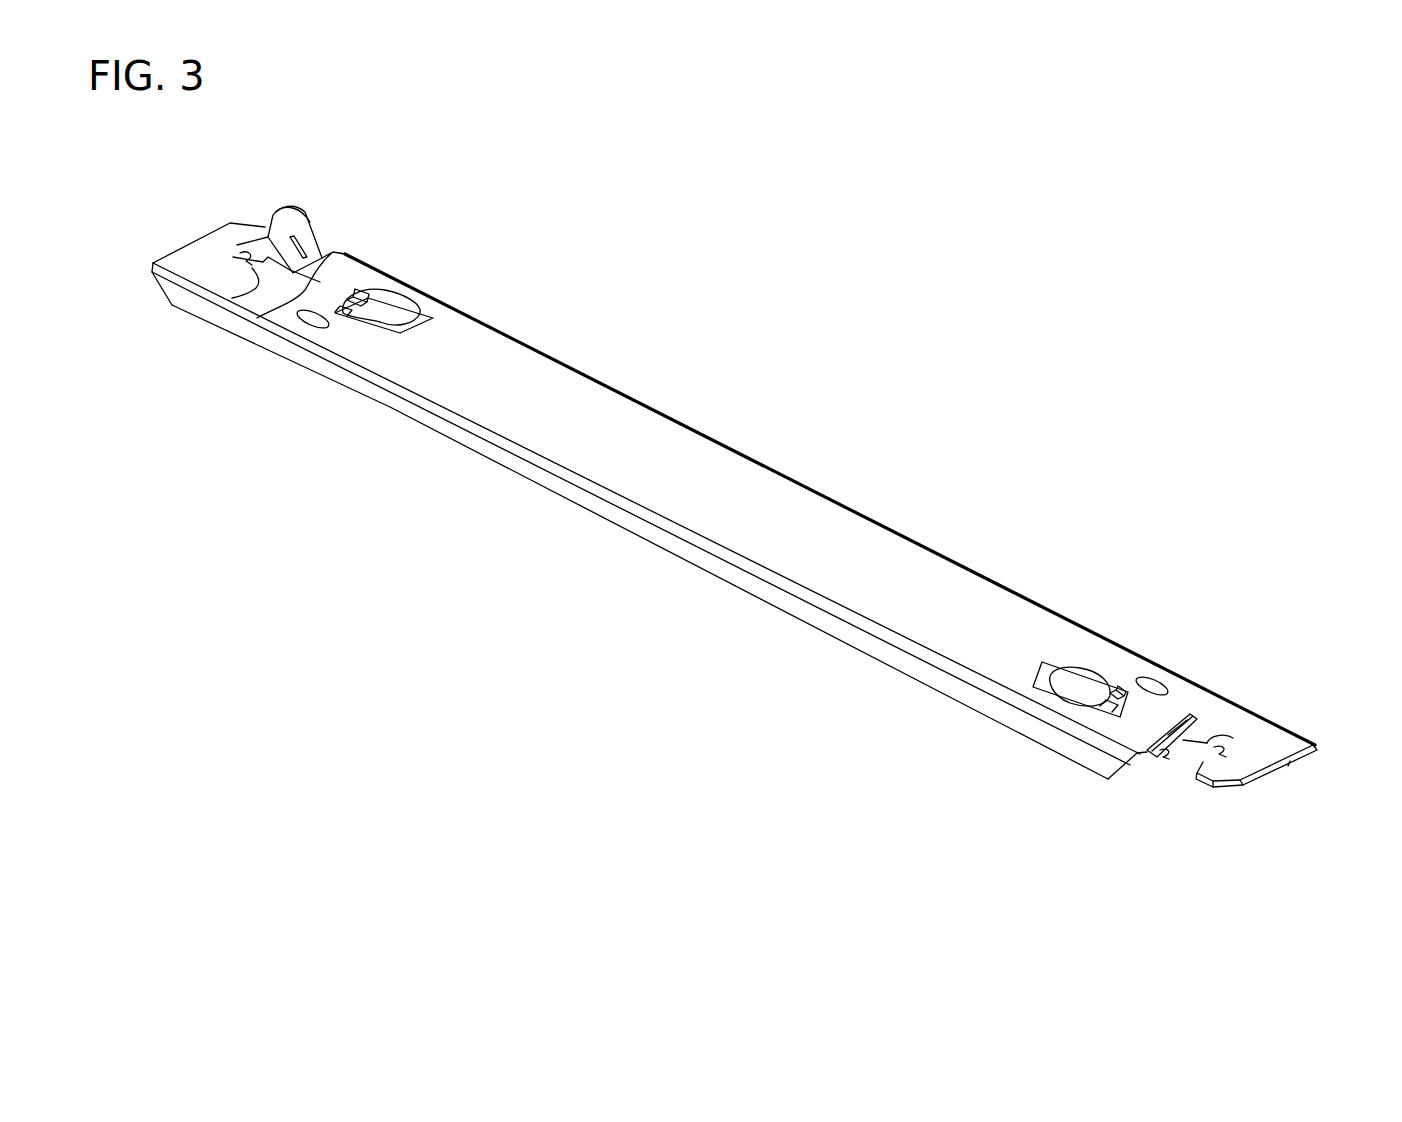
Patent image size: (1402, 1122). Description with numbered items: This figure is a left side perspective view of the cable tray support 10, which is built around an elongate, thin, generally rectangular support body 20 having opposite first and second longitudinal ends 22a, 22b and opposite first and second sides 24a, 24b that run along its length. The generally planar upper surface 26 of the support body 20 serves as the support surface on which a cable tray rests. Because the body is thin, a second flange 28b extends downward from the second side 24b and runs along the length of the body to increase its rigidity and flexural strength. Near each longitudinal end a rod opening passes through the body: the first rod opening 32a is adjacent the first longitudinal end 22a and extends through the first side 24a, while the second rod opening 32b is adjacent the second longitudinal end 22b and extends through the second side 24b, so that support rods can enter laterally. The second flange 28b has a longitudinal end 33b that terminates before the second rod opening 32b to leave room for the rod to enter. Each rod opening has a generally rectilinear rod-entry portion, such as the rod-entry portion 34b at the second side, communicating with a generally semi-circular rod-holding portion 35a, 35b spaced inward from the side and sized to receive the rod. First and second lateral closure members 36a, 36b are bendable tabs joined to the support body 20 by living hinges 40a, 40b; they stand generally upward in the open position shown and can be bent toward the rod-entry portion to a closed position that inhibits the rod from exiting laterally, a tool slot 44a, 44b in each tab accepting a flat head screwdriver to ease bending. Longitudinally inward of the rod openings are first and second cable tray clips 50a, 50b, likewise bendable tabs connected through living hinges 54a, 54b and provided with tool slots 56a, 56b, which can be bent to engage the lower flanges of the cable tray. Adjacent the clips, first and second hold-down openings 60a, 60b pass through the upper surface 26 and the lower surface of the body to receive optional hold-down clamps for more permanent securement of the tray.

The cable tray support 10 is at (809, 316).
The support body 20 is at (733, 515).
The first longitudinal end 22a is at (192, 237).
The second longitudinal end 22b is at (1270, 772).
The first side 24a is at (553, 361).
The second side 24b is at (535, 450).
The upper surface 26 is at (907, 592).
The second flange 28b is at (637, 530).
The first rod opening 32a is at (252, 234).
The second rod opening 32b is at (1205, 760).
The longitudinal end of the second flange 33b is at (1122, 775).
The rod-entry portion 34b is at (1170, 755).
The rod-holding portion 35a is at (252, 268).
The rod-holding portion 35b is at (1236, 742).
The first lateral closure member 36a is at (366, 231).
The second lateral closure member 36b is at (1227, 665).
The living hinge 40a is at (315, 272).
The living hinge 40b is at (1130, 737).
The tool slot 44a is at (318, 246).
The tool slot 44b is at (1237, 732).
The first cable tray clip 50a is at (349, 395).
The second cable tray clip 50b is at (1057, 665).
The living hinge 54a is at (347, 300).
The living hinge 54b is at (1128, 692).
The tool slot 56a is at (342, 313).
The tool slot 56b is at (1107, 712).
The first hold-down opening 60a is at (307, 322).
The second hold-down opening 60b is at (1156, 677).